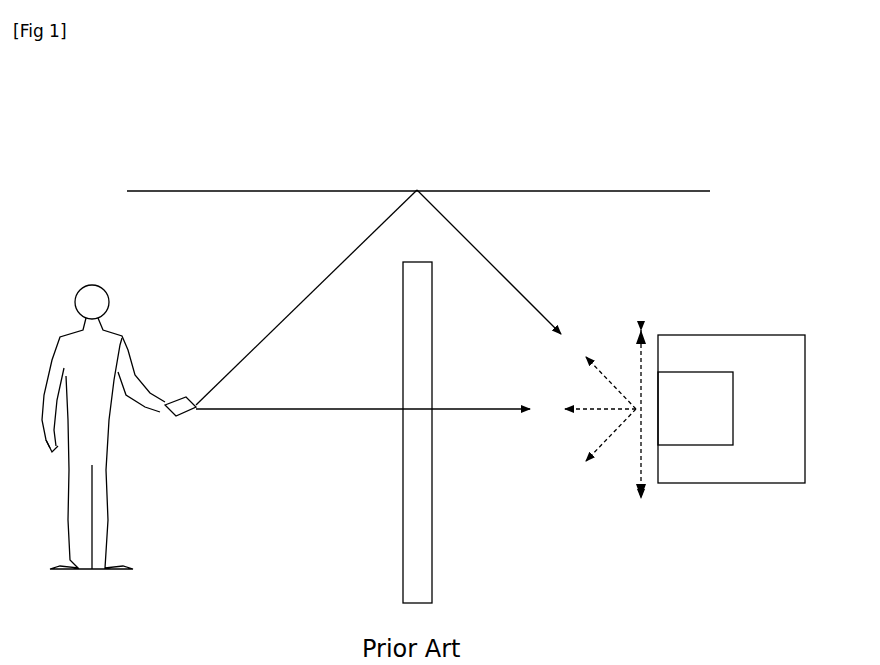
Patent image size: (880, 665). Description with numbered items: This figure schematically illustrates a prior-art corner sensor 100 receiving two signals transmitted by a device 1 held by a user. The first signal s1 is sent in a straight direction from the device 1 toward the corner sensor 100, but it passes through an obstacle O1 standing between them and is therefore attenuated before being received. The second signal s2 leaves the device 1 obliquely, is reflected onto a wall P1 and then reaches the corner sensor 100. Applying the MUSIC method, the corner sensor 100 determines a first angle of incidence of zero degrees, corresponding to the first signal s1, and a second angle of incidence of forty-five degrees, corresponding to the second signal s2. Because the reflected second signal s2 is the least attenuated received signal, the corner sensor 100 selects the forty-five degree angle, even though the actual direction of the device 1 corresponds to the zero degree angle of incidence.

The device 1 is at (184, 420).
The wall P1 is at (272, 190).
The first signal s1 is at (363, 425).
The second signal s2 is at (378, 297).
The obstacle O1 is at (434, 510).
The corner sensor 100 is at (705, 446).